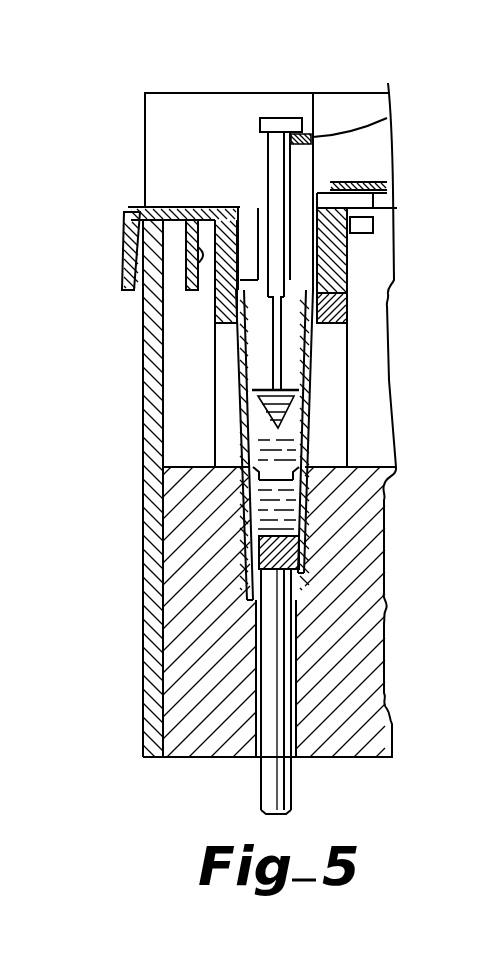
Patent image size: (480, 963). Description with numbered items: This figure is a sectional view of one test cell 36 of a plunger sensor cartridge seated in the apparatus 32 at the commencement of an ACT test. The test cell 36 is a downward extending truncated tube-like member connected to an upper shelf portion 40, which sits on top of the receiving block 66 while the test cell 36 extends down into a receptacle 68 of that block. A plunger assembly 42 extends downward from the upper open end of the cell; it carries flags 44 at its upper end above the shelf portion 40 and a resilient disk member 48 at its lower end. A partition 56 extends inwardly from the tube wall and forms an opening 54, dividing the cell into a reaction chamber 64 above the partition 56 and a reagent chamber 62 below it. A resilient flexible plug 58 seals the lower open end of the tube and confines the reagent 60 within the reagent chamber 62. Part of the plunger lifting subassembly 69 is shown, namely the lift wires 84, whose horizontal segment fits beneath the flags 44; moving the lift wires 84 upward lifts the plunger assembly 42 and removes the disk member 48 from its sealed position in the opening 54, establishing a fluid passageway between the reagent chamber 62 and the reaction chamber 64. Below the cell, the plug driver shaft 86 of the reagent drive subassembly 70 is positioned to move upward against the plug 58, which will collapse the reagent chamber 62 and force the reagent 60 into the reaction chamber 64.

The apparatus 32 is at (93, 164).
The plunger assembly 42 is at (181, 155).
The flags 44 is at (300, 120).
The plunger lifting subassembly 69 is at (294, 81).
The lift wires 84 is at (318, 137).
The shelf portion 40 is at (150, 195).
The receptacle 68 is at (352, 300).
The receiving block 66 is at (218, 298).
The test cell 36 is at (221, 367).
The opening 54 is at (248, 382).
The partition 56 is at (247, 479).
The disk member 48 is at (300, 390).
The reaction chamber 64 is at (313, 440).
The reagent 60 is at (290, 515).
The reagent chamber 62 is at (308, 554).
The plug 58 is at (305, 568).
The reagent drive subassembly 70 is at (221, 730).
The plug driver shaft 86 is at (260, 807).